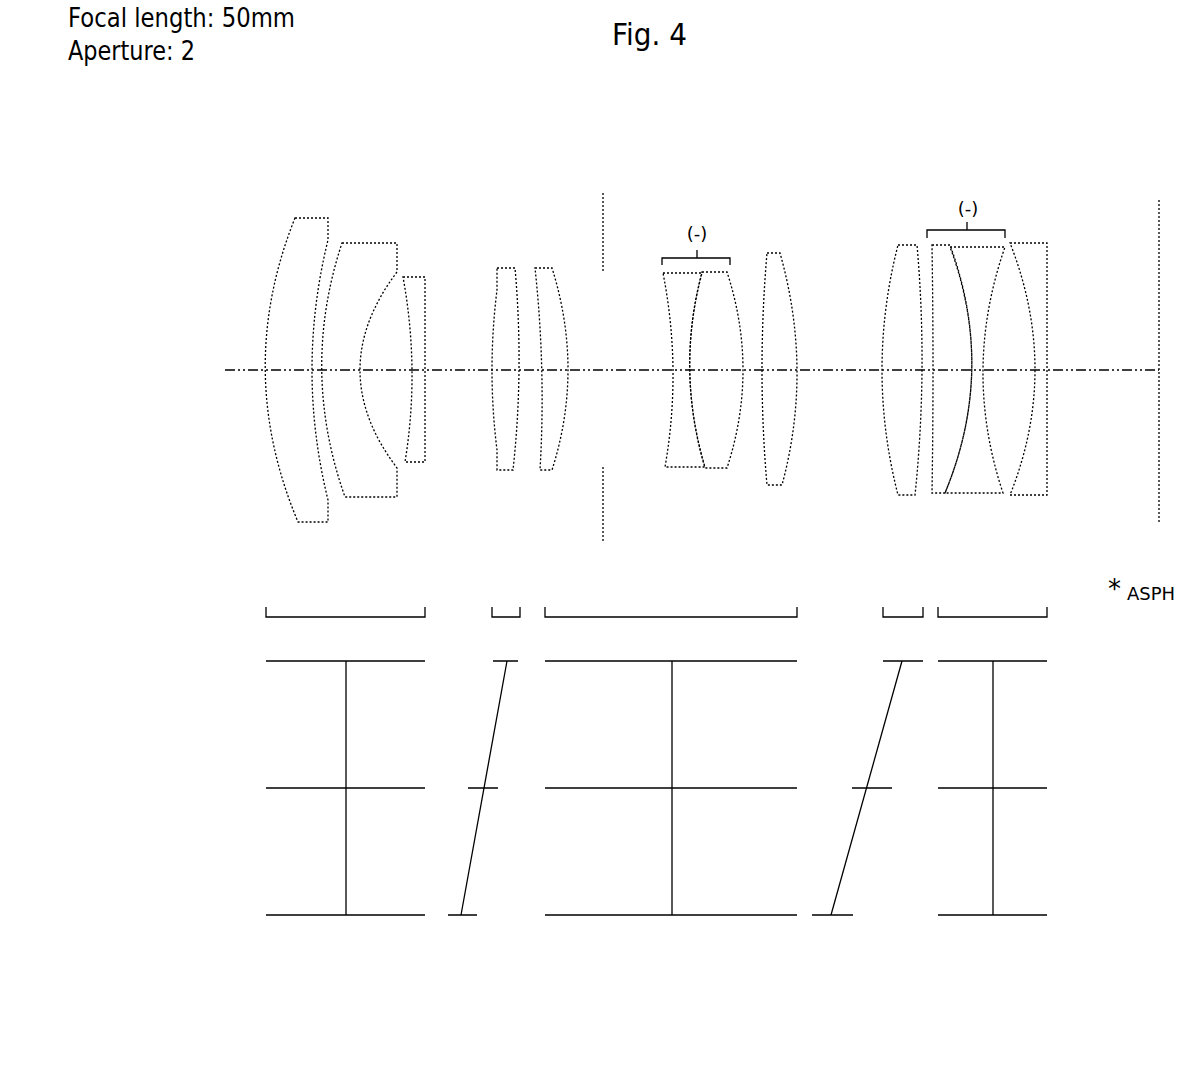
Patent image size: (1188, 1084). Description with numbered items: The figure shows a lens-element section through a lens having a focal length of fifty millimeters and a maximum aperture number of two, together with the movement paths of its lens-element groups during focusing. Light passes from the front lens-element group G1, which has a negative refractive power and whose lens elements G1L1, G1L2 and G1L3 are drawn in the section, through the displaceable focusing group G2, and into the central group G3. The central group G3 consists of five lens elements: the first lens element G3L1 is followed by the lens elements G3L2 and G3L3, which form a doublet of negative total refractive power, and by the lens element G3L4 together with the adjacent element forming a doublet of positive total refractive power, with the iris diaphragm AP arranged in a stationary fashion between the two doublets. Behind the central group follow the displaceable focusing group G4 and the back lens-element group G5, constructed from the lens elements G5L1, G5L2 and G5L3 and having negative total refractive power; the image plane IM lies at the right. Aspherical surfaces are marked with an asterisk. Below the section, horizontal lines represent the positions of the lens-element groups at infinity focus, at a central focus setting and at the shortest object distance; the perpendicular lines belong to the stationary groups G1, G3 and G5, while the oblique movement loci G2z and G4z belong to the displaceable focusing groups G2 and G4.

The first lens of first lens group (positive meniscus) G1L1 is at (297, 380).
The second lens of first lens group (negative) G1L2 is at (359, 380).
The third lens of first lens group (negative, aspherical) G1L3 is at (425, 383).
The second lens-element group G2 is at (505, 382).
The first lens of third lens group (positive, aspherical) G3L1 is at (547, 382).
The second lens of third lens group (negative, cemented) G3L2 is at (673, 385).
The third lens of third lens group (positive, cemented) G3L3 is at (716, 384).
The fourth lens of third lens group (positive) G3L4 is at (776, 383).
The fourth lens-element group G4 is at (902, 380).
The first lens of fifth lens group (positive, cemented) G5L1 is at (947, 386).
The second lens of fifth lens group (negative, cemented) G5L2 is at (980, 387).
The third lens of fifth lens group (negative, aspherical) G5L3 is at (1037, 381).
The iris diaphragm AP is at (604, 381).
The image plane IM is at (1160, 374).
The first lens-element group G1 is at (345, 751).
The second lens group (positive) movement locus G2z is at (492, 744).
The third lens-element group G3 is at (671, 751).
The fourth lens group (positive) movement locus G4z is at (872, 744).
The fifth lens-element group G5 is at (992, 751).